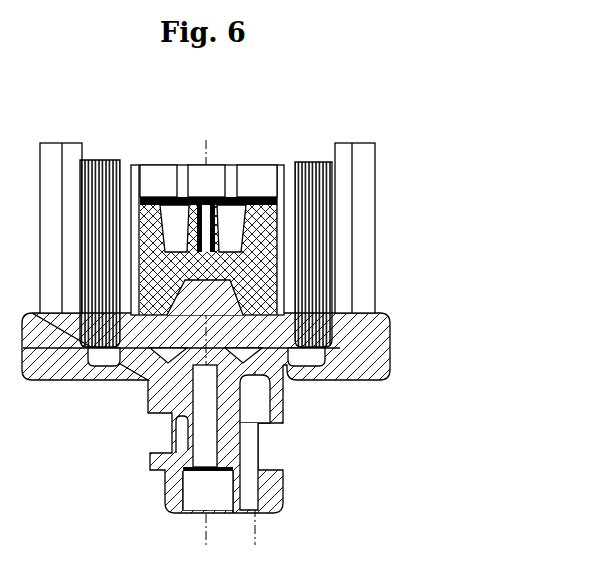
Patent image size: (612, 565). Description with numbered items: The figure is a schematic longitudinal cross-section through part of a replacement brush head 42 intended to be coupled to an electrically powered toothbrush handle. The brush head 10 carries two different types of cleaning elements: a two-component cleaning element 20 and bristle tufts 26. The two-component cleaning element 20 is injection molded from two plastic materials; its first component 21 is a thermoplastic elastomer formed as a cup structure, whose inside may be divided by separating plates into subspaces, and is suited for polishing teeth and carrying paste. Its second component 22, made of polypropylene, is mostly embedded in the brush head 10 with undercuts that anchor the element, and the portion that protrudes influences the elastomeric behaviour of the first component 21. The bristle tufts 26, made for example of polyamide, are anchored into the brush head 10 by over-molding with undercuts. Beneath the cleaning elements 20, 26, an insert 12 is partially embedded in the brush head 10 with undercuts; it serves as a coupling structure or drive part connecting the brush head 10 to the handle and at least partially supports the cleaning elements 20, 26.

The brush head 10 is at (40, 362).
The insert 12 is at (227, 393).
The 2K cleaning element 20 is at (245, 185).
The first component 21 is at (278, 215).
The second component 22 is at (207, 302).
The bristle tufts 26 is at (100, 247).
The replacement brush head 42 is at (395, 208).